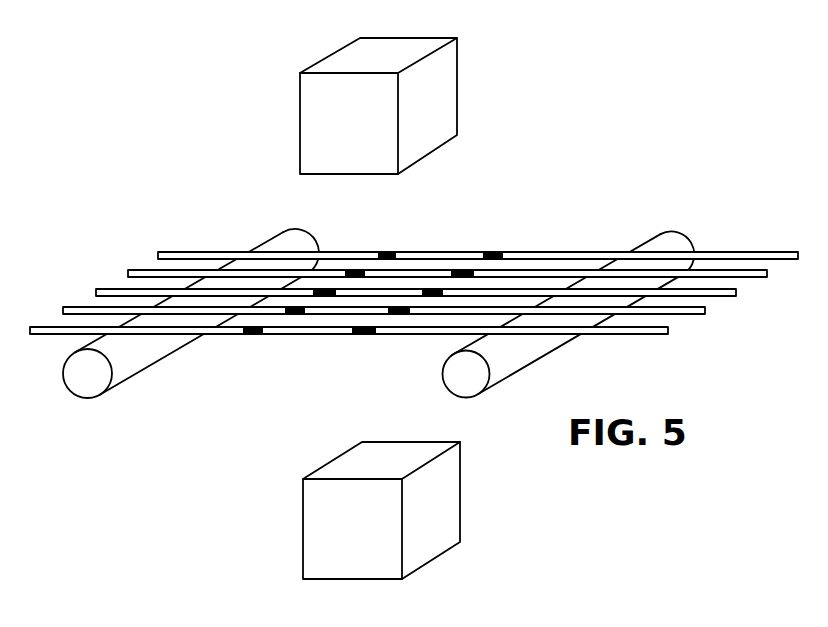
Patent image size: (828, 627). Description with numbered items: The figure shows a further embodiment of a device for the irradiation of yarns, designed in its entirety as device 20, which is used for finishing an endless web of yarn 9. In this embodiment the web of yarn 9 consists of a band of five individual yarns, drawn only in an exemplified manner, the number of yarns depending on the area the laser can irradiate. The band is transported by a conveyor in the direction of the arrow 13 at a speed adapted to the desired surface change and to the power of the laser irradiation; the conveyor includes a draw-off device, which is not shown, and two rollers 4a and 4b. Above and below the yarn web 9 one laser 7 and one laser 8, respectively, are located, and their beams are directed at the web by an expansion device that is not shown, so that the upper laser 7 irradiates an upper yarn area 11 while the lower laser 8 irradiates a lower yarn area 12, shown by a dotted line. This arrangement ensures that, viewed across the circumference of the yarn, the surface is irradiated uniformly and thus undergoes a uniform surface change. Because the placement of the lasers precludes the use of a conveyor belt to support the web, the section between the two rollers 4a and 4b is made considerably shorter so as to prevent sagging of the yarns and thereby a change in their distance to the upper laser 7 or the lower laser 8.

The upper laser 7 is at (447, 127).
The lower laser 8 is at (443, 536).
The endless web of yarn 9 is at (740, 252).
The upper yarn area 11 is at (390, 254).
The lower yarn area 12 is at (484, 257).
The arrow 13 is at (688, 355).
The device for the irradiation of yarns 20 is at (414, 318).
The roller 4a is at (467, 383).
The roller 4b is at (85, 382).